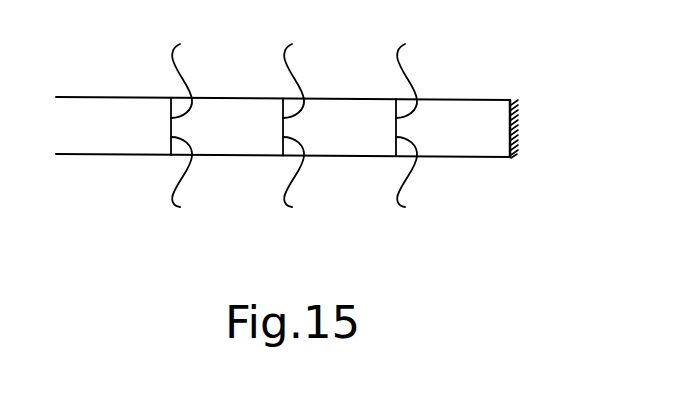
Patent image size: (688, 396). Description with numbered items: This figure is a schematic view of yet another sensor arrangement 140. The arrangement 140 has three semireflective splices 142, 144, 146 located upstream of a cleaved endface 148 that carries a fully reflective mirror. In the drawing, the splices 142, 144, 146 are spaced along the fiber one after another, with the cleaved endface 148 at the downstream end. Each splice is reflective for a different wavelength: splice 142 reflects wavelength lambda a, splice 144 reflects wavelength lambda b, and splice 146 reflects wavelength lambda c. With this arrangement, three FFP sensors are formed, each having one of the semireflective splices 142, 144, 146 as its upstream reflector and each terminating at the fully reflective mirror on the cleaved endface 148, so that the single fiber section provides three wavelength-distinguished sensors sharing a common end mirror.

The sensor arrangement 140 is at (117, 202).
The semireflective splice 142 is at (199, 121).
The semireflective splice 144 is at (312, 121).
The semireflective splice 146 is at (424, 121).
The cleaved endface 148 is at (522, 120).